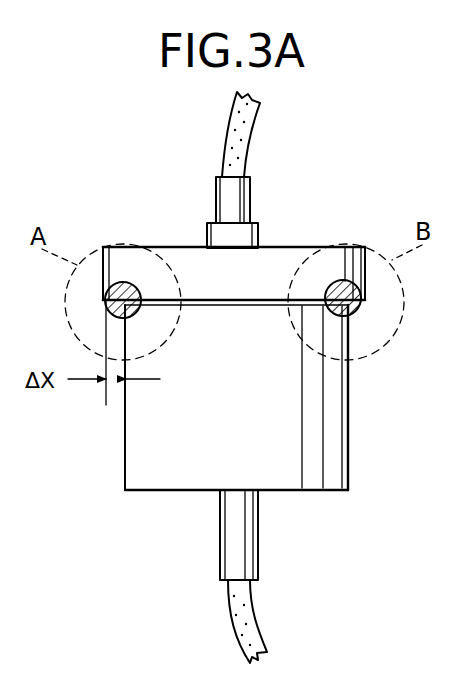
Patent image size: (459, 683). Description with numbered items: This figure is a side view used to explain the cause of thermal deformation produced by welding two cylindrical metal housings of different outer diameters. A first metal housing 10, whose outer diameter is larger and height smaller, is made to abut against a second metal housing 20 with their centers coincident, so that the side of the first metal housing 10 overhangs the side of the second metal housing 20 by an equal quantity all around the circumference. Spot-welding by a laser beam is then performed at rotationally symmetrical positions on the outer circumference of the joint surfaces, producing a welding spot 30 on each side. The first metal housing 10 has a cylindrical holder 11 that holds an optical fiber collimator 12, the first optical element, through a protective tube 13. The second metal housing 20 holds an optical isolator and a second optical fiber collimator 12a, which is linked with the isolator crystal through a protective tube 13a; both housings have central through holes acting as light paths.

The first metal housing 10 is at (283, 247).
The second metal housing 20 is at (333, 428).
The welding spot 30 is at (342, 281).
The cylindrical holder 11 is at (218, 233).
The protective tube 13 is at (216, 186).
The optical fiber collimator 12 is at (233, 112).
The protective tube 13a is at (248, 548).
The optical fiber collimator 12a is at (230, 605).